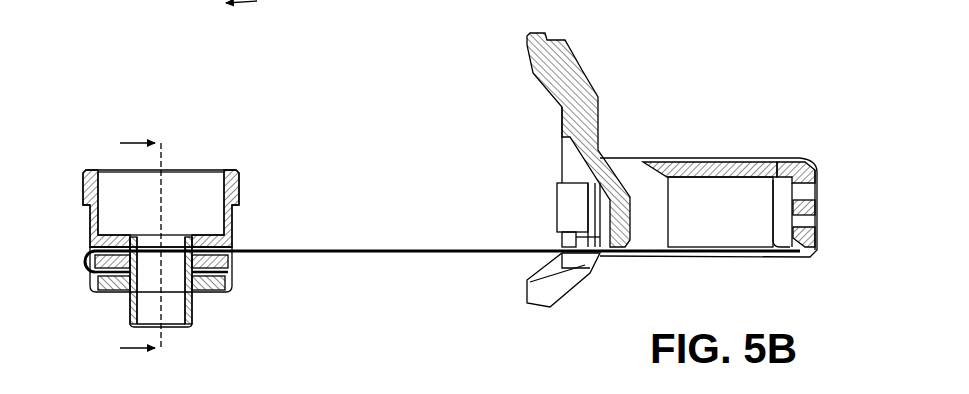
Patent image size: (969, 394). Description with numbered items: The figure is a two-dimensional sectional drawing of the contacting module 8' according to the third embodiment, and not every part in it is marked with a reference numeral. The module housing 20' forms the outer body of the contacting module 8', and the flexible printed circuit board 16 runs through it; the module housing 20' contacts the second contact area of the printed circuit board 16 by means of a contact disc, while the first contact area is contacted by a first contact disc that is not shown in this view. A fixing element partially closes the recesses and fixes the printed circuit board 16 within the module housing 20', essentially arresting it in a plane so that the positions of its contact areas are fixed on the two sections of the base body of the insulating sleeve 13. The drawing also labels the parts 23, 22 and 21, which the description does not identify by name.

The contacting module 8' is at (156, 201).
The cap 23 is at (78, 184).
The insulating sleeve 13 is at (118, 308).
The module housing 20' is at (178, 302).
The flexible printed circuit board 16 is at (347, 260).
The arm 22 is at (517, 68).
The housing 21 is at (705, 154).